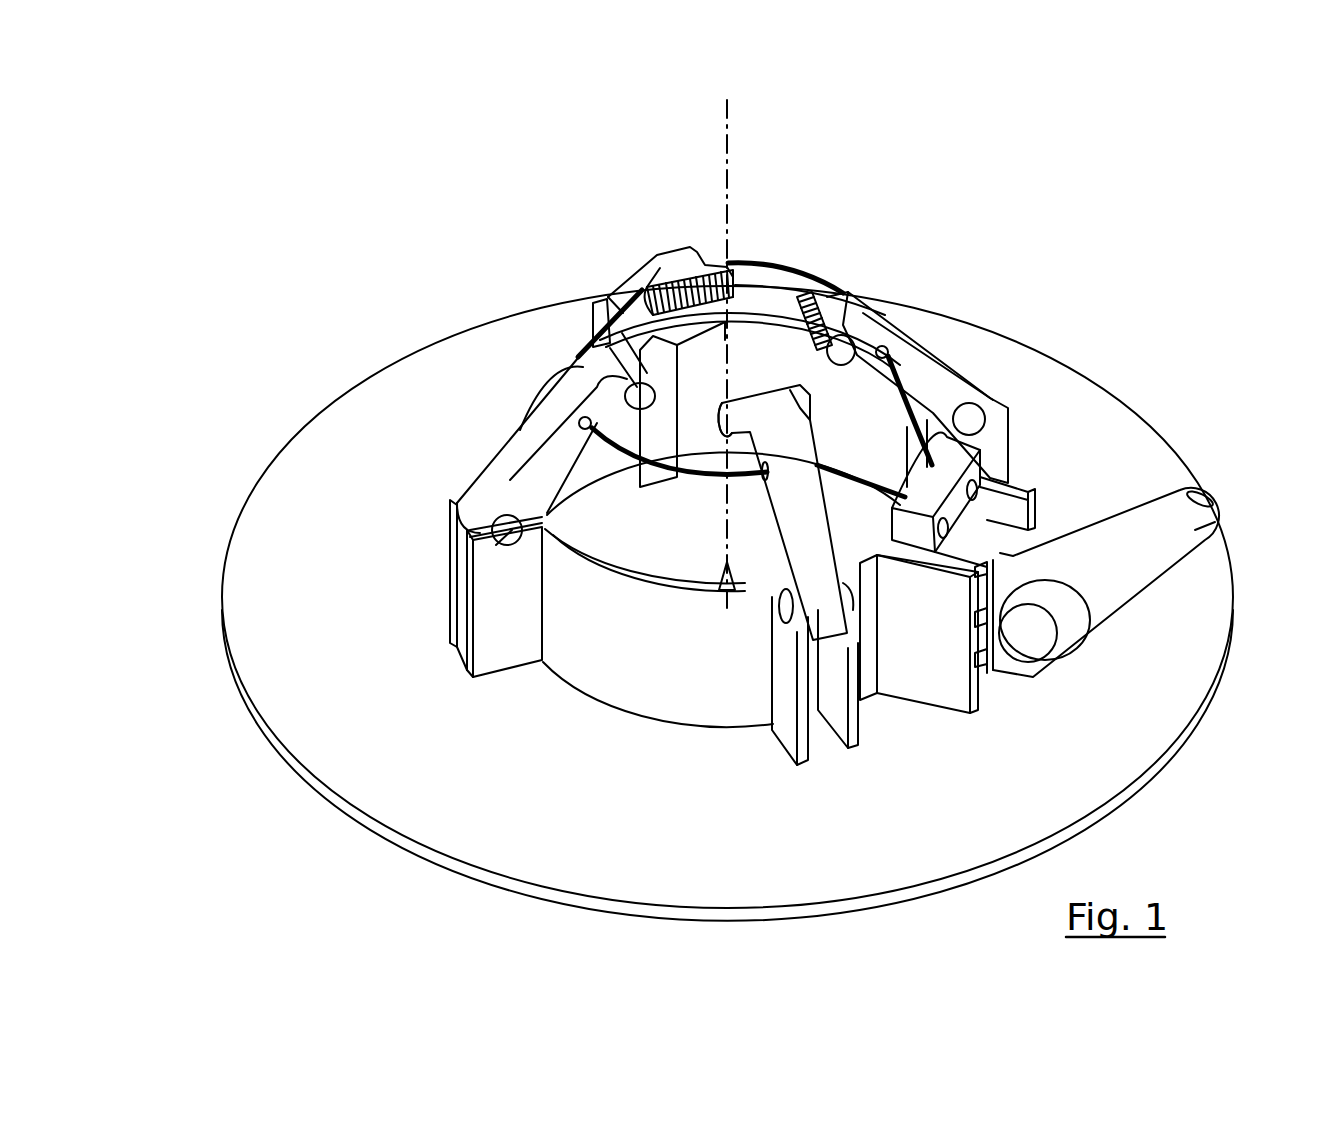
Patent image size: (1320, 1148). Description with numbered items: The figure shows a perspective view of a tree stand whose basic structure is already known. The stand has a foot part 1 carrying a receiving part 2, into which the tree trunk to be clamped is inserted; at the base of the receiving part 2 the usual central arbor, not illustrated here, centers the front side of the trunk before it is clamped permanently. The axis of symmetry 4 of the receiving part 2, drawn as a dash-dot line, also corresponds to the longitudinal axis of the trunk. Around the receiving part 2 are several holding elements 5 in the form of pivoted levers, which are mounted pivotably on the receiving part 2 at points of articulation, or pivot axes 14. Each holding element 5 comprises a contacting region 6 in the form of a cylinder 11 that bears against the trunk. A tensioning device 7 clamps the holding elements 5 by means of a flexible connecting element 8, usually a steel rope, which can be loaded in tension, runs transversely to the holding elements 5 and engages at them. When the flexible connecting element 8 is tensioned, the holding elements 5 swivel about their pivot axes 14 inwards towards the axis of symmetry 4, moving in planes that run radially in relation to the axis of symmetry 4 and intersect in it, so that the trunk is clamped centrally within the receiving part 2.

The foot part 1 is at (1098, 420).
The receiving part 2 is at (672, 541).
The axis of symmetry 4 is at (724, 337).
The holding elements 5 is at (583, 370).
The contacting regions 6 is at (591, 348).
The tensioning device 7 is at (1084, 495).
The flexible connecting element 8 is at (587, 427).
The cylinders 11 is at (682, 262).
The points of articulation (pivot axes) 14 is at (497, 545).